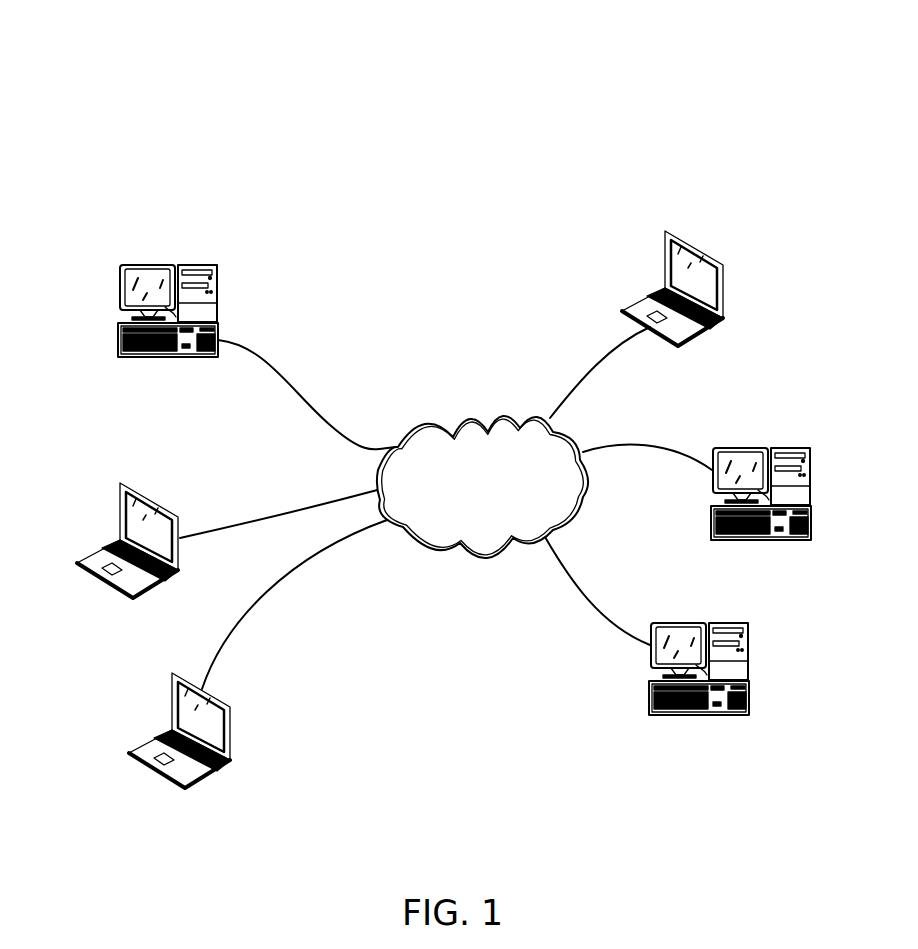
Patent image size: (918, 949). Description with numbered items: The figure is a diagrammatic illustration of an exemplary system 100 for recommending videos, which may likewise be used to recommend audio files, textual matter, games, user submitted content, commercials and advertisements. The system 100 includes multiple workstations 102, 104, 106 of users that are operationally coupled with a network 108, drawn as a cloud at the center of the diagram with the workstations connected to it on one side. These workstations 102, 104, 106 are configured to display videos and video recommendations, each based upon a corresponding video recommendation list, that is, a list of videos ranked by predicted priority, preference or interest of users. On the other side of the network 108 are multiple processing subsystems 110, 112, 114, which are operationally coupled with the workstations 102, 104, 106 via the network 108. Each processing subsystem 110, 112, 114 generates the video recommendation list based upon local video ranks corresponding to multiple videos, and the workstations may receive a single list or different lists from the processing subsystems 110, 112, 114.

The system 100 is at (683, 68).
The workstation 102 is at (197, 265).
The workstation 104 is at (102, 583).
The workstation 106 is at (208, 775).
The network 108 is at (463, 417).
The processing subsystem 110 is at (700, 335).
The processing subsystem 112 is at (798, 448).
The processing subsystem 114 is at (728, 623).